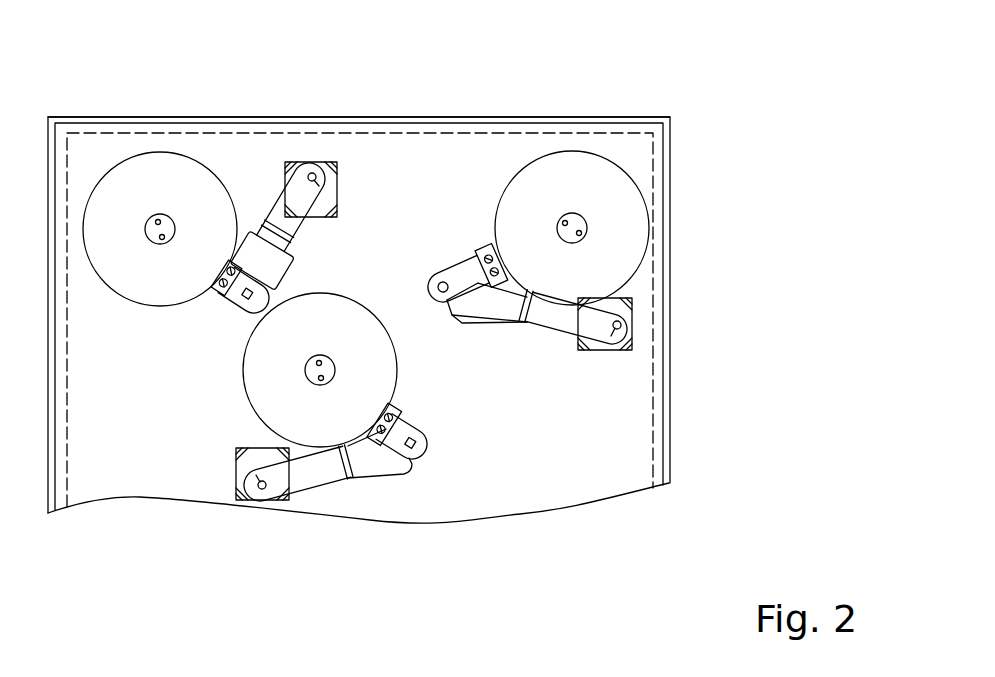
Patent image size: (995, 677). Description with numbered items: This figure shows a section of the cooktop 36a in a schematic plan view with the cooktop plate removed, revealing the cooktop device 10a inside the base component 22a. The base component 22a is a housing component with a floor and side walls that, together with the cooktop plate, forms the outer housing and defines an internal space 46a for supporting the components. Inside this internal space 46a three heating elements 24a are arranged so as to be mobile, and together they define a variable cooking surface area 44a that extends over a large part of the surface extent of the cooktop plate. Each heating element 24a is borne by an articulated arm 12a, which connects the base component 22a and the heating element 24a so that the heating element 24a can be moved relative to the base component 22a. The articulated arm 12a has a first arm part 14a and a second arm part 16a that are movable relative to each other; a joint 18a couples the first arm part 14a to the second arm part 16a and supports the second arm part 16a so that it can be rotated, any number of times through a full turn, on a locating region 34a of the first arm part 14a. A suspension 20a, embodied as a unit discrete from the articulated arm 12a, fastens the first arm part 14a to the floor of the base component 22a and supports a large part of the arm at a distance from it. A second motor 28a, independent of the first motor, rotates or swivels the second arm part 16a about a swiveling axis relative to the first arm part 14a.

The cooktop device 10a is at (735, 196).
The articulated arm 12a is at (490, 307).
The first arm part 14a is at (587, 322).
The second arm part 16a is at (472, 270).
The joint 18a is at (432, 307).
The suspension 20a is at (610, 362).
The base component 22a is at (627, 383).
The heating element 24a is at (610, 248).
The second motor 28a is at (463, 324).
The locating region 34a is at (532, 336).
The cooktop 36a is at (789, 108).
The variable cooking surface area 44a is at (550, 137).
The internal space 46a is at (168, 445).